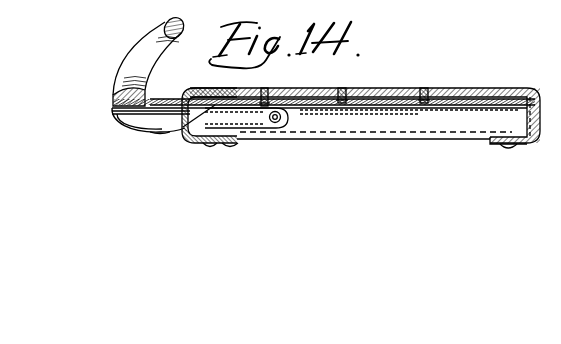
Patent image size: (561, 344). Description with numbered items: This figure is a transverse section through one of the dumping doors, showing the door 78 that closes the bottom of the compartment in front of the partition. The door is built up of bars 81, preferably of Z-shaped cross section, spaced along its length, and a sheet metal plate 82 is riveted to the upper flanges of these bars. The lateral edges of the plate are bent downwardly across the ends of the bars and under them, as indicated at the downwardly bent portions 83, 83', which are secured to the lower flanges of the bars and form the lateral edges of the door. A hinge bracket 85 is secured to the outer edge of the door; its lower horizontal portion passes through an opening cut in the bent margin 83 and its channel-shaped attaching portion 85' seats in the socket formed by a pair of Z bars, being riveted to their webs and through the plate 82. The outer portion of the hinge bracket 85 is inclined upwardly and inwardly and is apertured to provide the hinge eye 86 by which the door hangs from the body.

The door 78 is at (400, 80).
The bar 81 is at (362, 108).
The sheet metal plate 82 is at (435, 93).
The downwardly bent portion 83 is at (306, 129).
The downwardly bent portion 83' is at (481, 157).
The hinge bracket 85 is at (128, 110).
The attaching portion 85' is at (137, 150).
The hinge eye 86 is at (170, 37).